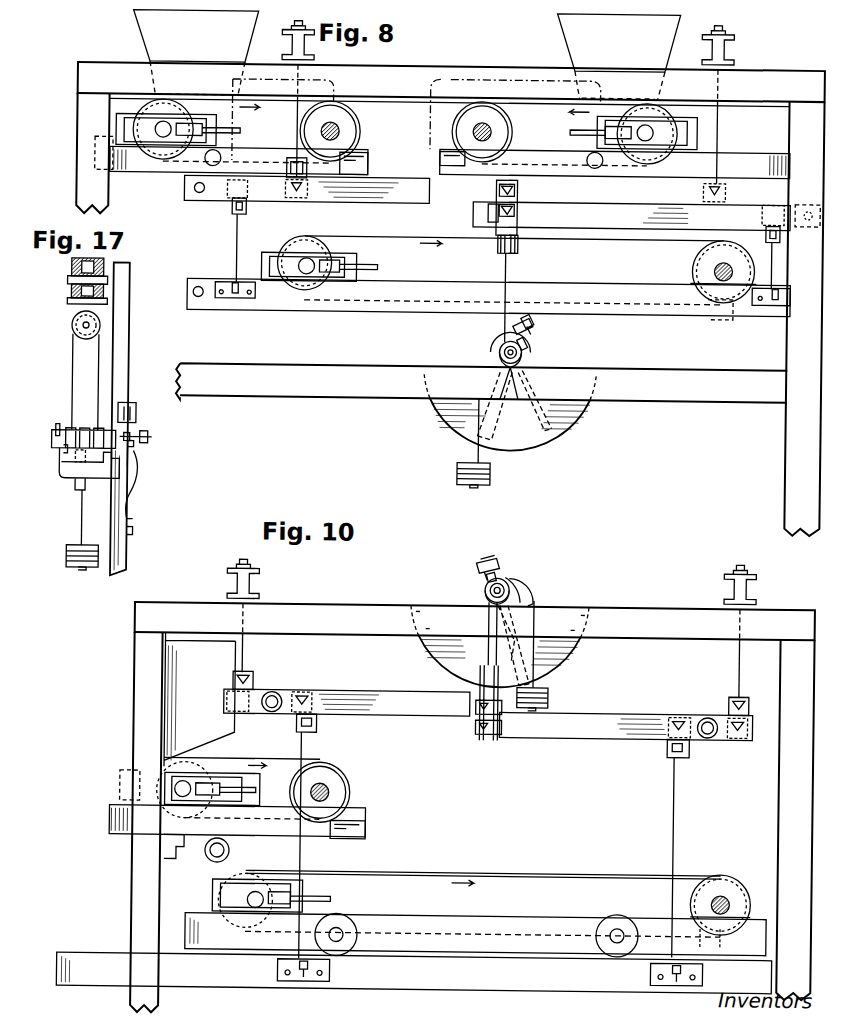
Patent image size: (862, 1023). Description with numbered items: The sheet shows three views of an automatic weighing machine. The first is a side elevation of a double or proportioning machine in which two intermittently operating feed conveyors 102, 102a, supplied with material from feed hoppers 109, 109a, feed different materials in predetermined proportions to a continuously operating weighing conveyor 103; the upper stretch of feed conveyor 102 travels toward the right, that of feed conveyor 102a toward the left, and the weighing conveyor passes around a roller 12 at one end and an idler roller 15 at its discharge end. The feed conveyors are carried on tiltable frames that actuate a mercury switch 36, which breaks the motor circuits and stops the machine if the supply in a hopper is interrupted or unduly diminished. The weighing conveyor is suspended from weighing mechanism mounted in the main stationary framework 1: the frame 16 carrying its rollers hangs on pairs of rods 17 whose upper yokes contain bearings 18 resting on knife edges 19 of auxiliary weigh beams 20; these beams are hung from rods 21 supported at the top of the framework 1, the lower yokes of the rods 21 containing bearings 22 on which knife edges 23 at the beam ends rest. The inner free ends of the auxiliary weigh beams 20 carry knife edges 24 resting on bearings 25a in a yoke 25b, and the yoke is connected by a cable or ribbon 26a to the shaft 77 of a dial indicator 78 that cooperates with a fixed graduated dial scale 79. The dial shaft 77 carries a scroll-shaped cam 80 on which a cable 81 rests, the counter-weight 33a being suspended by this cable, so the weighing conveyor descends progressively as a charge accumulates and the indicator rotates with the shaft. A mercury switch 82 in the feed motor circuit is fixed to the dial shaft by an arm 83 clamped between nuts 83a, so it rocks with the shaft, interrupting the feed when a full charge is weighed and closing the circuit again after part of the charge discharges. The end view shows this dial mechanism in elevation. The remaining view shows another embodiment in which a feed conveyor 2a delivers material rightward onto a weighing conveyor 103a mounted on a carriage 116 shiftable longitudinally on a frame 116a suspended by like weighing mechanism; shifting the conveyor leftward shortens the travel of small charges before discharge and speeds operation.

In FIG. 8, the framework 1 is at (80, 124).
In FIG. 17, the framework 1 is at (126, 566).
In FIG. 10, the framework 1 is at (132, 732).
In FIG. 10, the feed conveyor 2a is at (242, 763).
In FIG. 8, the lower conveyor drive pulley 12 is at (352, 241).
In FIG. 8, the idler roller 15 is at (703, 259).
In FIG. 8, the frame 16 is at (403, 304).
In FIG. 8, the rods 17 is at (238, 236).
In FIG. 10, the rods 17 is at (301, 852).
In FIG. 8, the bearings 18 is at (794, 197).
In FIG. 8, the knife edges 19 is at (234, 194).
In FIG. 8, the auxiliary weigh beams 20 is at (411, 192).
In FIG. 17, the auxiliary weigh beams 20 is at (74, 306).
In FIG. 10, the auxiliary weigh beams 20 is at (400, 701).
In FIG. 8, the rods 21 is at (304, 47).
In FIG. 10, the rods 21 is at (247, 654).
In FIG. 8, the bearings 22 is at (306, 195).
In FIG. 8, the knife edges 23 is at (292, 194).
In FIG. 8, the knife edges 24 is at (490, 205).
In FIG. 17, the knife edges 24 is at (104, 300).
In FIG. 8, the bearings 25a is at (522, 198).
In FIG. 17, the bearings 25a is at (72, 266).
In FIG. 8, the yoke 25b is at (522, 240).
In FIG. 10, the yoke 25b is at (484, 738).
In FIG. 8, the cable or ribbon 26a is at (511, 267).
In FIG. 17, the cable or ribbon 26a is at (70, 386).
In FIG. 10, the cable or ribbon 26a is at (487, 656).
In FIG. 8, the counter-weight 33a is at (479, 477).
In FIG. 17, the counter-weight 33a is at (76, 568).
In FIG. 10, the counter-weight 33a is at (551, 685).
In FIG. 8, the switch 36 is at (369, 158).
In FIG. 10, the switch 36 is at (368, 825).
In FIG. 8, the dial shaft 77 is at (490, 340).
In FIG. 17, the dial shaft 77 is at (56, 432).
In FIG. 10, the dial shaft 77 is at (522, 577).
In FIG. 8, the dial indicator 78 is at (510, 423).
In FIG. 17, the dial indicator 78 is at (138, 518).
In FIG. 10, the dial indicator 78 is at (520, 609).
In FIG. 8, the dial scale 79 is at (453, 410).
In FIG. 17, the dial scale 79 is at (134, 534).
In FIG. 10, the dial scale 79 is at (439, 653).
In FIG. 8, the scroll-shaped cam 80 is at (500, 354).
In FIG. 17, the scroll-shaped cam 80 is at (80, 482).
In FIG. 10, the scroll-shaped cam 80 is at (520, 587).
In FIG. 8, the cable or ribbon 81 is at (481, 448).
In FIG. 17, the cable or ribbon 81 is at (82, 524).
In FIG. 10, the cable or ribbon 81 is at (537, 663).
In FIG. 8, the switch 82 is at (544, 326).
In FIG. 17, the switch 82 is at (132, 402).
In FIG. 10, the switch 82 is at (496, 553).
In FIG. 8, the arm 83 is at (530, 340).
In FIG. 17, the arm 83 is at (132, 448).
In FIG. 10, the arm 83 is at (496, 571).
In FIG. 17, the nuts 83a is at (144, 430).
In FIG. 8, the feed conveyor 102 is at (274, 102).
In FIG. 8, the feed conveyor 102a is at (537, 100).
In FIG. 8, the weighing conveyor 103 is at (461, 238).
In FIG. 10, the weighing conveyor 103a is at (513, 867).
In FIG. 8, the feed hopper 109 is at (148, 29).
In FIG. 8, the feed hopper 109a is at (575, 30).
In FIG. 10, the carriage 116 is at (546, 923).
In FIG. 10, the frame 116a is at (513, 976).